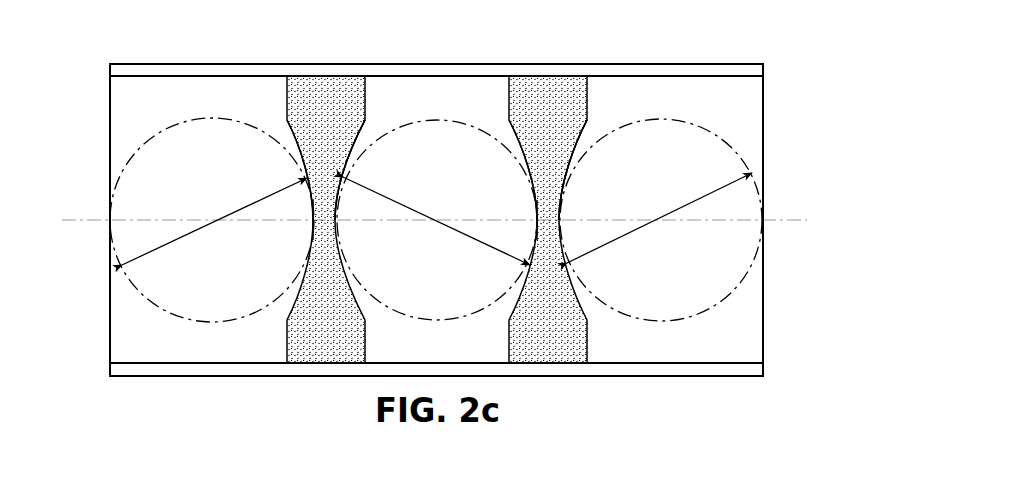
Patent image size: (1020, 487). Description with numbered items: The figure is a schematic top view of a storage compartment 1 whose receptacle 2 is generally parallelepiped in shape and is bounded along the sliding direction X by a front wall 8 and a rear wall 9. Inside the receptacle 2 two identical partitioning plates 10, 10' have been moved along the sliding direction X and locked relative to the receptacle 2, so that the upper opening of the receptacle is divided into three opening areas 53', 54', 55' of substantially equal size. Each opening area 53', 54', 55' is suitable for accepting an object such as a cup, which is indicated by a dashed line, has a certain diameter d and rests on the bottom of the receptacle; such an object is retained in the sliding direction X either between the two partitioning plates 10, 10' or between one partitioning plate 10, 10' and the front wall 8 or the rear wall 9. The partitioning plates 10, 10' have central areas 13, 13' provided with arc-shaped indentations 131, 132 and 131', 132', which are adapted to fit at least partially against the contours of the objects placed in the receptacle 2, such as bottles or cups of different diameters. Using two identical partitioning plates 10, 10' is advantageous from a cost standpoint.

The storage compartment 1 is at (138, 58).
The receptacle 2 is at (719, 60).
The front wall 8 is at (765, 145).
The rear wall 9 is at (109, 148).
The partitioning plate 10 is at (556, 188).
The partitioning plate 10' is at (320, 188).
The central area 13 is at (577, 152).
The central area 13' is at (296, 155).
The arc-shaped indentation 131 is at (607, 170).
The arc-shaped indentation 131' is at (386, 170).
The arc-shaped indentation 132 is at (491, 196).
The arc-shaped indentation 132' is at (267, 196).
The opening area 53' is at (183, 204).
The opening area 54' is at (437, 166).
The opening area 55' is at (693, 201).
The diameter d is at (437, 219).
The sliding direction X is at (795, 222).